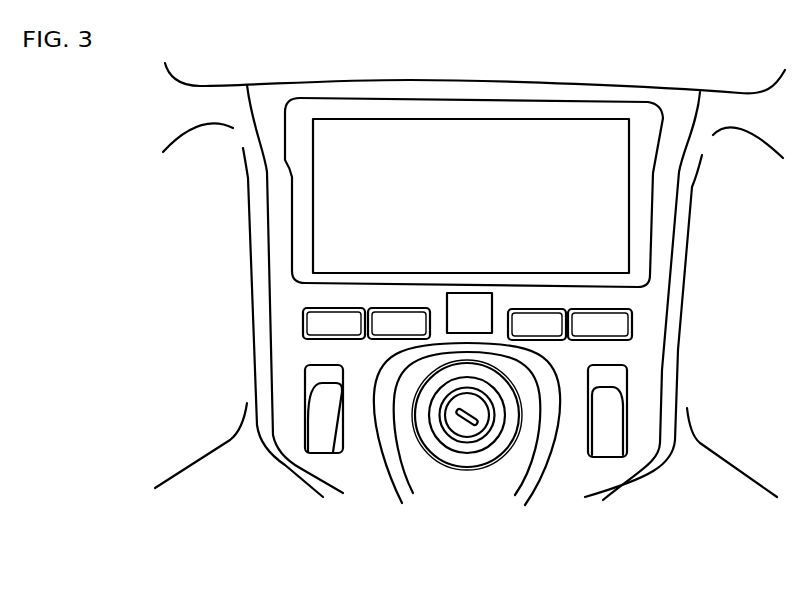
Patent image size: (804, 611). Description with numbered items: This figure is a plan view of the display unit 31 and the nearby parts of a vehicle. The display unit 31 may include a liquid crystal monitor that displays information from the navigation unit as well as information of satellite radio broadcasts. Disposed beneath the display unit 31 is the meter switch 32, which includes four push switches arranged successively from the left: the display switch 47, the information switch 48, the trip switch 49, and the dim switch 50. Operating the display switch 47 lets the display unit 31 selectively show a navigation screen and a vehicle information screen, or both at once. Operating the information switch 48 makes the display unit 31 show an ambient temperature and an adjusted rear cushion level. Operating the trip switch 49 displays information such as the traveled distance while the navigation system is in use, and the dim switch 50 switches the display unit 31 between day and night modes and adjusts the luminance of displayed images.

The display unit 31 is at (498, 201).
The meter switch 32 is at (652, 309).
The display switch 47 is at (303, 328).
The information switch 48 is at (403, 310).
The trip switch 49 is at (533, 312).
The dim switch 50 is at (632, 328).